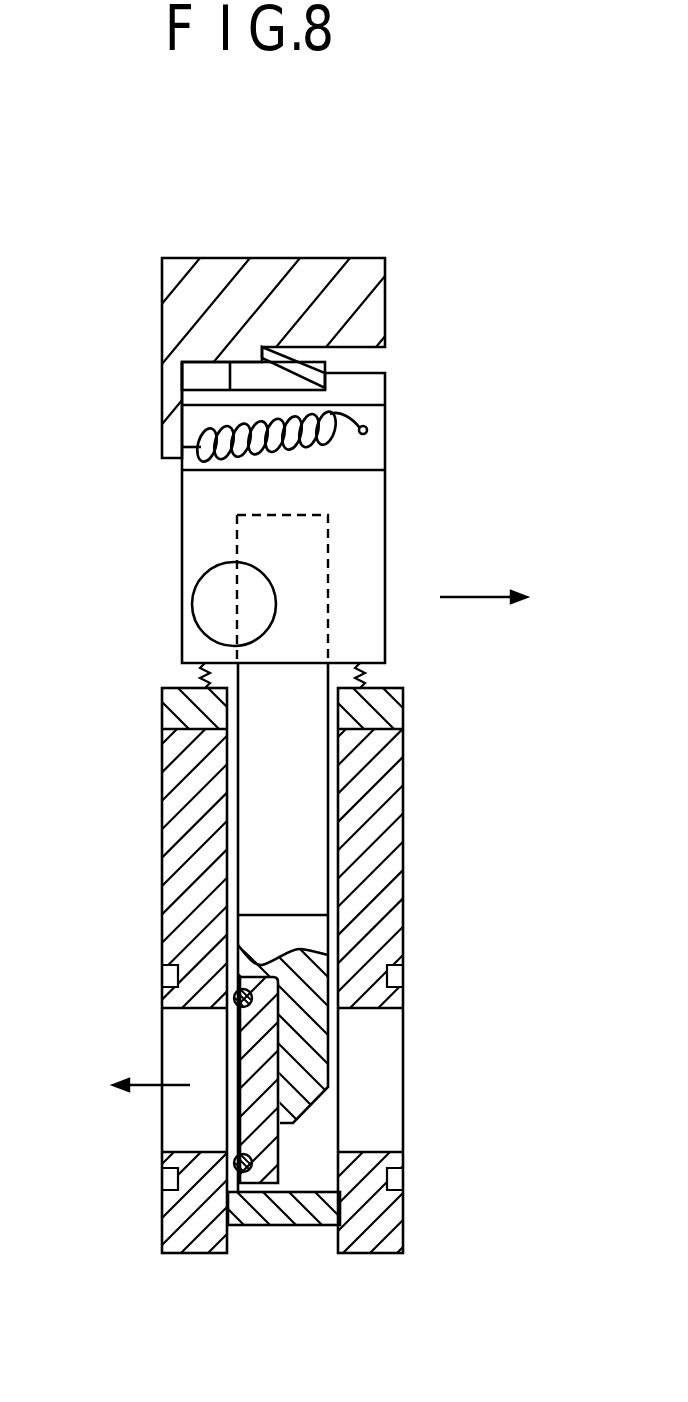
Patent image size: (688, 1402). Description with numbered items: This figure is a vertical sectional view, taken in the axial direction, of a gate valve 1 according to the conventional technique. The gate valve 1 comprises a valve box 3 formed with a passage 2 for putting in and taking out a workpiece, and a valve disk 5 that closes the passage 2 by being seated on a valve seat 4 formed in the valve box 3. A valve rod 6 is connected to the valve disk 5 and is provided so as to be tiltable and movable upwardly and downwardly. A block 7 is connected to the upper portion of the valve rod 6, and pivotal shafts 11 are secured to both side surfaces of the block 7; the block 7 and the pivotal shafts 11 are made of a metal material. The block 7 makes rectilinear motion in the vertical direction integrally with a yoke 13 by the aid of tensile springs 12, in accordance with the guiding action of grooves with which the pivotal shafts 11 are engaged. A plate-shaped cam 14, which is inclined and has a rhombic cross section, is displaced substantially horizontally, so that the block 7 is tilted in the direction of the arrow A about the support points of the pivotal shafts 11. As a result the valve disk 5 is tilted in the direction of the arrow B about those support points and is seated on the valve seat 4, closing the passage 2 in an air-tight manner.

The gate valve 1 is at (508, 190).
The passage 2 is at (190, 1152).
The valve box 3 is at (188, 867).
The valve seat 4 is at (238, 1000).
The valve disk 5 is at (267, 1088).
The valve rod 6 is at (313, 848).
The block 7 is at (373, 548).
The pivotal shafts 11 is at (207, 602).
The tensile springs 12 is at (255, 455).
The yoke 13 is at (315, 280).
The plate-shaped cam 14 is at (322, 373).